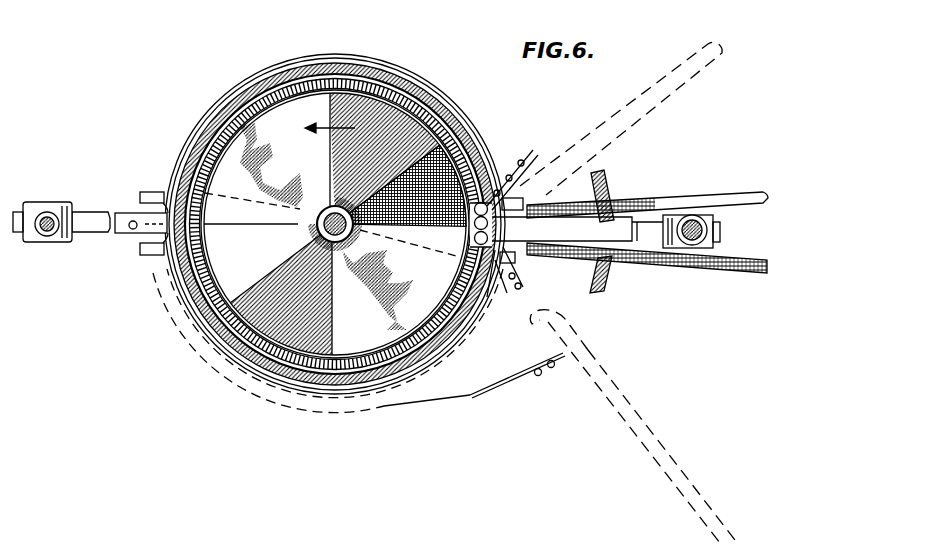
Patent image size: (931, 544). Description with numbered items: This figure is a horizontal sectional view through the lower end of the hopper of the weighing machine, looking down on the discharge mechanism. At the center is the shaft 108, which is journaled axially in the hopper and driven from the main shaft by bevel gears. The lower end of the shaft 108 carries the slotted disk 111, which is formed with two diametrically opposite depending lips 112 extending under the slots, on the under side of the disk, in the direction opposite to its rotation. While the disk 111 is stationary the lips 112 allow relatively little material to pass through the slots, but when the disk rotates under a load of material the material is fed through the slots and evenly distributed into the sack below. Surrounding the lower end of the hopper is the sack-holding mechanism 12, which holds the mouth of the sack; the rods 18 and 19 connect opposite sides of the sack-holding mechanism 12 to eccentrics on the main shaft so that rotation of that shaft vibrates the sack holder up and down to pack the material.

The sack-holding mechanism 12 is at (518, 158).
The rod 18 is at (43, 235).
The rod 19 is at (688, 245).
The shaft 108 is at (325, 232).
The slotted disk 111 is at (367, 326).
The depending lips 112 is at (247, 250).